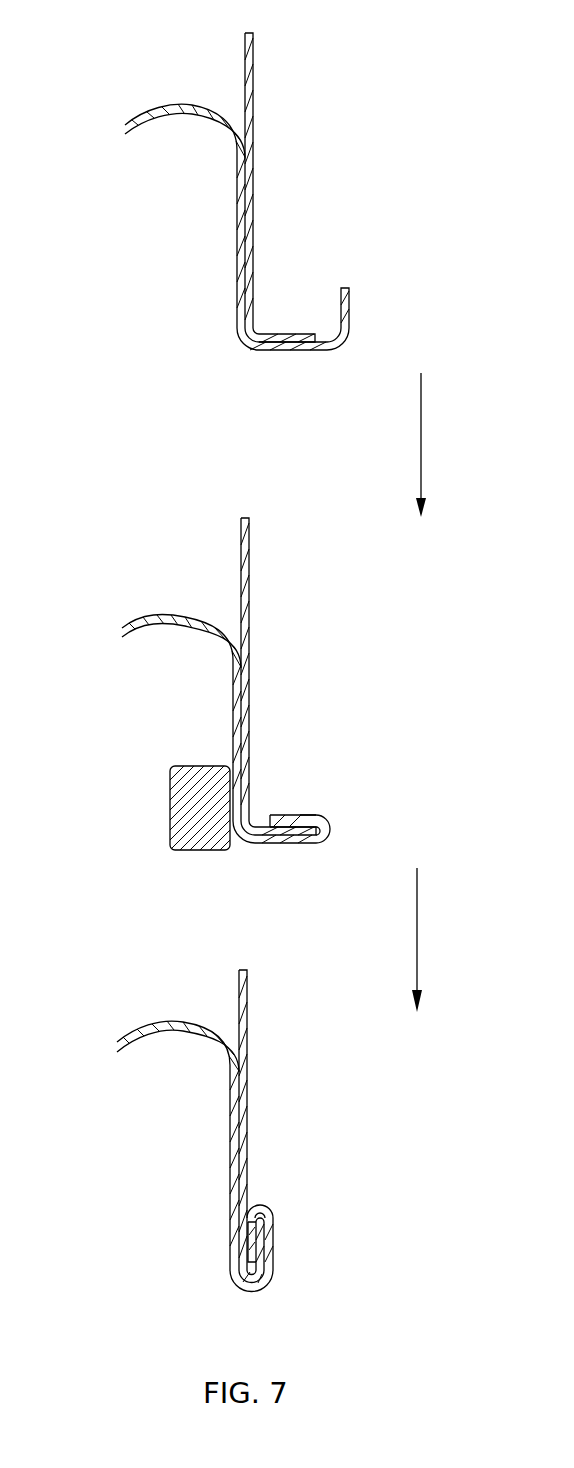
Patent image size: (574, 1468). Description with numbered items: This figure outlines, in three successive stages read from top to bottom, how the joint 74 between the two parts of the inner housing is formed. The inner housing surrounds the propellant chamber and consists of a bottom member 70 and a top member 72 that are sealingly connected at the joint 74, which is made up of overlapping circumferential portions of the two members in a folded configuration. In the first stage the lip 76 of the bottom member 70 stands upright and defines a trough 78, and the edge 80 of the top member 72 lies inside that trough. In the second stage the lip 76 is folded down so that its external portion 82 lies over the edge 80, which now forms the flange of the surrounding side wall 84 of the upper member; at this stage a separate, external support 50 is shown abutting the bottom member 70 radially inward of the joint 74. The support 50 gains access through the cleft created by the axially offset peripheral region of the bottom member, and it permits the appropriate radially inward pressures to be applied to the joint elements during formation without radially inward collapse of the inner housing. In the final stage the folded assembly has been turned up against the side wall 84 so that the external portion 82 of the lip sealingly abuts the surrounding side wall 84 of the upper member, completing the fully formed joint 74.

The external support 50 is at (197, 820).
The bottom member 70 is at (152, 118).
The top member 72 is at (253, 67).
The joint 74 is at (270, 1245).
The lip 76 is at (350, 312).
The trough 78 is at (318, 831).
The edge 80 is at (300, 334).
The external portion 82 is at (300, 814).
The surrounding side wall 84 is at (250, 787).